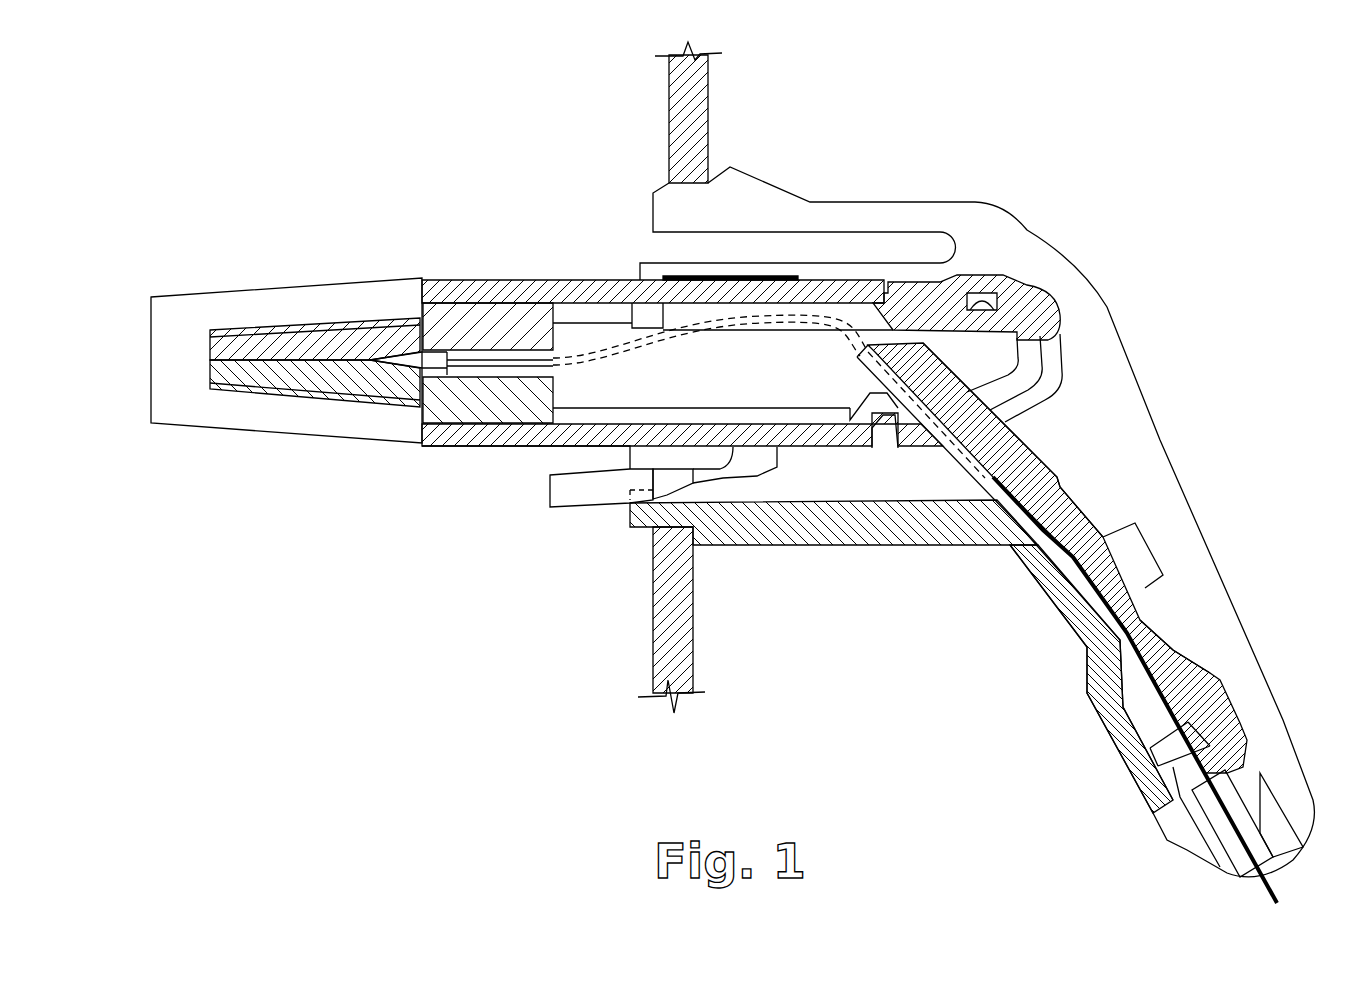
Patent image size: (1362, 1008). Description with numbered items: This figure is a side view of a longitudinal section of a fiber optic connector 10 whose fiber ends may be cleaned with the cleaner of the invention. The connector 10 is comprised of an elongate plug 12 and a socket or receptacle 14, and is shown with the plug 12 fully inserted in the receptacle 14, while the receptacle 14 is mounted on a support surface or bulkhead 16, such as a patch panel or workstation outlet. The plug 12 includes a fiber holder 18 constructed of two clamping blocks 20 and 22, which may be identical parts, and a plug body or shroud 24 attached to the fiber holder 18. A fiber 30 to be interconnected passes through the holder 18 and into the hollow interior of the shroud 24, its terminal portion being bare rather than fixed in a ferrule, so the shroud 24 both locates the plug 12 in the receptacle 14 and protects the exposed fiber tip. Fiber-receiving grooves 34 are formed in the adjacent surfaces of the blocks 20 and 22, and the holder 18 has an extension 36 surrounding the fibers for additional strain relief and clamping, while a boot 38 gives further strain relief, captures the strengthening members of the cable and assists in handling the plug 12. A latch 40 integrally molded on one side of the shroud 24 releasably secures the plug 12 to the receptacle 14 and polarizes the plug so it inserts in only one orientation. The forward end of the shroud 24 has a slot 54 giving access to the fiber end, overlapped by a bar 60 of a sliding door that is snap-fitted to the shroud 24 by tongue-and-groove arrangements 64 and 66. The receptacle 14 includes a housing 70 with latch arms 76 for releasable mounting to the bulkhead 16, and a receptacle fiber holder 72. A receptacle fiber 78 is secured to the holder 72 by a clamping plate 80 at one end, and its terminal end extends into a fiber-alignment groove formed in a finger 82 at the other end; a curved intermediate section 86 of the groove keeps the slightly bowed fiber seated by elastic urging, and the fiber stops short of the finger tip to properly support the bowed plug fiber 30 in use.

The connector 10 is at (1188, 265).
The plug 12 is at (715, 344).
The receptacle 14 is at (1216, 521).
The bulkhead 16 is at (667, 120).
The fiber holder 18 is at (489, 408).
The clamping block 20 is at (530, 332).
The clamping block 22 is at (525, 397).
The shroud 24 is at (560, 278).
The fiber 30 is at (630, 363).
The fiber-receiving grooves 34 is at (465, 372).
The extension 36 is at (264, 312).
The boot 38 is at (237, 417).
The latch 40 is at (595, 507).
The slot 54 is at (1027, 365).
The bar 60 is at (1033, 392).
The tongue-and-groove arrangement 64 is at (978, 290).
The tongue-and-groove arrangement 66 is at (877, 407).
The housing 70 is at (817, 543).
The receptacle fiber holder 72 is at (1157, 630).
The latch arms 76 is at (767, 180).
The receptacle fiber 78 is at (1150, 718).
The clamping plate 80 is at (1203, 840).
The finger 82 is at (1060, 490).
The intermediate section 86 is at (1137, 597).